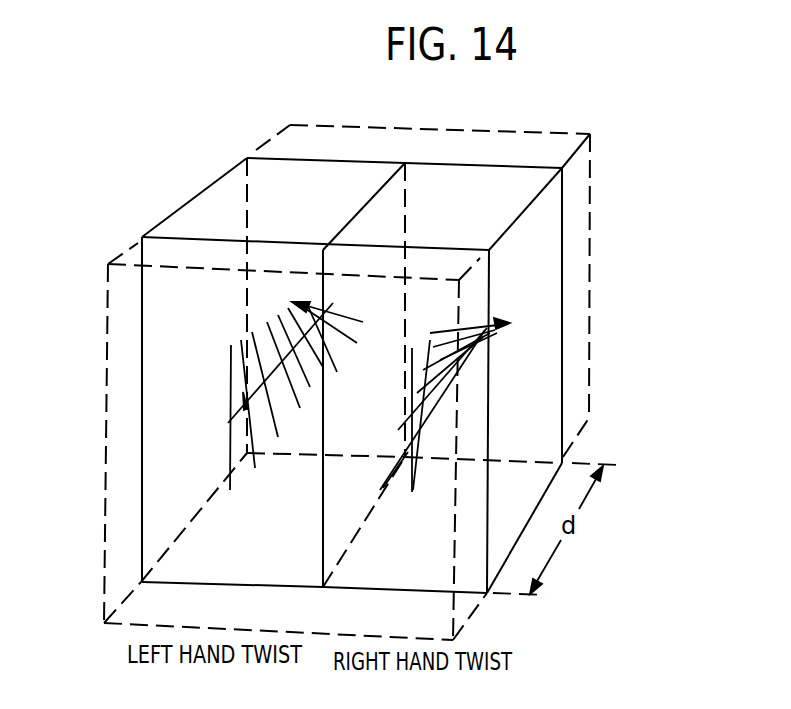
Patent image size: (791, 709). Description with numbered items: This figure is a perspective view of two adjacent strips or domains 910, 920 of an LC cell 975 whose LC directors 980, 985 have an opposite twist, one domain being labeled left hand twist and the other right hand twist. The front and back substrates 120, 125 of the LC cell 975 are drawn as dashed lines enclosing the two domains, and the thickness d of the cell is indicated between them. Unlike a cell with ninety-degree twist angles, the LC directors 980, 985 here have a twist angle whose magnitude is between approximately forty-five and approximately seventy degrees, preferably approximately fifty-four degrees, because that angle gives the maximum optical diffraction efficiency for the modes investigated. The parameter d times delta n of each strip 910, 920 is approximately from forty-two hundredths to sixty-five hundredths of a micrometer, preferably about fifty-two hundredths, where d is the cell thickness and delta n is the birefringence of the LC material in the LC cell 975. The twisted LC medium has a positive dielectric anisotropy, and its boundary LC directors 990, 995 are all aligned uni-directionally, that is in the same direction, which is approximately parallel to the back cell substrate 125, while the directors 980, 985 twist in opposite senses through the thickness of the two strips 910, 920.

The strip 910 is at (327, 175).
The strip 920 is at (476, 185).
The front substrate 120 is at (590, 250).
The back substrate 125 is at (472, 612).
The LC cell 975 is at (97, 635).
The LC director 980 is at (363, 322).
The LC director 985 is at (455, 328).
The boundary LC director 990 is at (230, 452).
The boundary LC director 995 is at (413, 383).